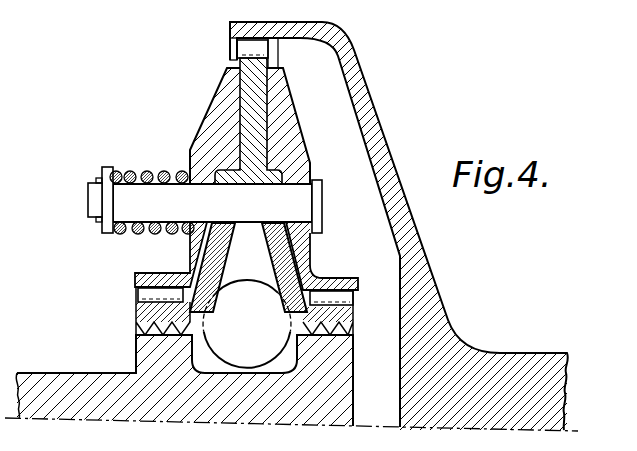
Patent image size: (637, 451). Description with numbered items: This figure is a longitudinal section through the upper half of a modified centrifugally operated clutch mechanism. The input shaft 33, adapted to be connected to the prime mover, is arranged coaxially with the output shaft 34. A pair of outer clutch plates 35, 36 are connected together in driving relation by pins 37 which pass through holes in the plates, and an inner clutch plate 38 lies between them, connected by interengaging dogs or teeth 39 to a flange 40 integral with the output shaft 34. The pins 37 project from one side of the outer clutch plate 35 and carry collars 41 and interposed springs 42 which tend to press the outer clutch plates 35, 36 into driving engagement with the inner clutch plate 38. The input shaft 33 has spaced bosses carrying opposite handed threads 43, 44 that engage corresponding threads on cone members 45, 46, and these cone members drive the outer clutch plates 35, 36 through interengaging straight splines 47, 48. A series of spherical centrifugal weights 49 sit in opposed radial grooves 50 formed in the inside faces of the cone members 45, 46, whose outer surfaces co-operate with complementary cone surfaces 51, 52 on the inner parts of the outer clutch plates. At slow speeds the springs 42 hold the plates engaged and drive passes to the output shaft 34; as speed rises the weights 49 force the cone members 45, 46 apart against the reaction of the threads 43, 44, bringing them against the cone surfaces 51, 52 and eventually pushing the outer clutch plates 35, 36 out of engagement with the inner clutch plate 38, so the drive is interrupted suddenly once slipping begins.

The input shaft 33 is at (63, 387).
The output shaft 34 is at (503, 372).
The outer clutch plate 35 is at (213, 150).
The outer clutch plate 36 is at (278, 117).
The pins 37 is at (167, 200).
The inner clutch plate 38 is at (250, 118).
The interengaging dogs or teeth 39 is at (245, 54).
The flange 40 is at (370, 142).
The collars 41 is at (112, 205).
The springs 42 is at (130, 233).
The threads 43 is at (157, 332).
The threads 44 is at (350, 335).
The cone member 45 is at (205, 310).
The cone member 46 is at (285, 312).
The straight splines 47 is at (147, 296).
The straight splines 48 is at (318, 300).
The centrifugal weights 49 is at (241, 333).
The radial grooves 50 is at (247, 272).
The cone surface 51 is at (197, 259).
The cone surface 52 is at (305, 242).